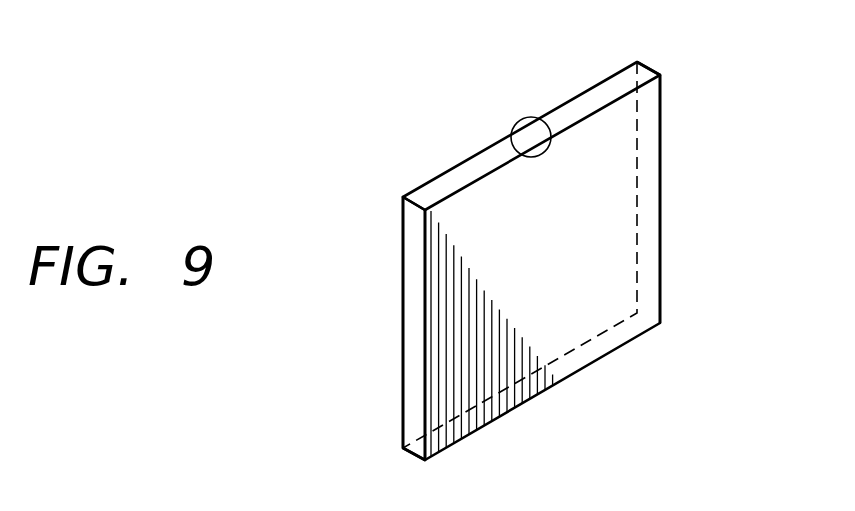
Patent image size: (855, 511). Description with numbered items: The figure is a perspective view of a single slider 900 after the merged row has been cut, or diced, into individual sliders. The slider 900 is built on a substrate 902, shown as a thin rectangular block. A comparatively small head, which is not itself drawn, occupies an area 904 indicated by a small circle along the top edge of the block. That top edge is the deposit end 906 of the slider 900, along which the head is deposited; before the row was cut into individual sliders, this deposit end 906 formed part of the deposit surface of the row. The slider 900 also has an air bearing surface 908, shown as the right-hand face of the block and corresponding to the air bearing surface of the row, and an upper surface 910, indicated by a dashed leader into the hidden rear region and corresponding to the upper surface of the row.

The slider 900 is at (407, 162).
The substrate 902 is at (405, 305).
The head area 904 is at (515, 123).
The deposit end 906 is at (653, 72).
The air bearing surface 908 is at (653, 211).
The upper surface 910 is at (593, 238).